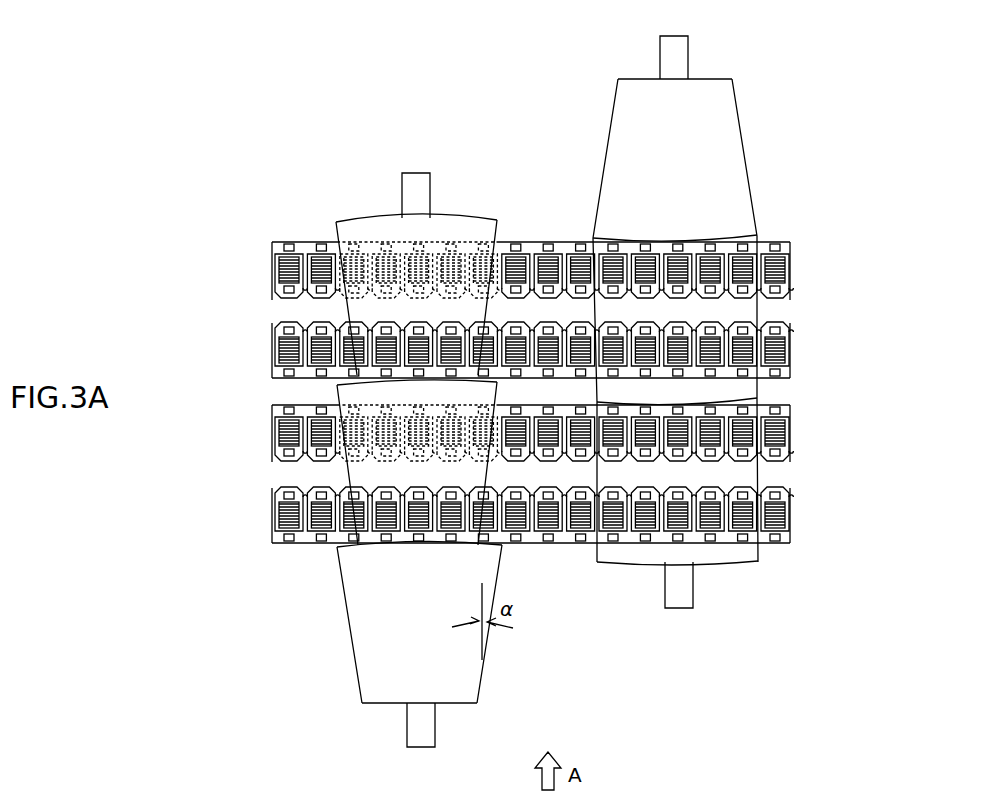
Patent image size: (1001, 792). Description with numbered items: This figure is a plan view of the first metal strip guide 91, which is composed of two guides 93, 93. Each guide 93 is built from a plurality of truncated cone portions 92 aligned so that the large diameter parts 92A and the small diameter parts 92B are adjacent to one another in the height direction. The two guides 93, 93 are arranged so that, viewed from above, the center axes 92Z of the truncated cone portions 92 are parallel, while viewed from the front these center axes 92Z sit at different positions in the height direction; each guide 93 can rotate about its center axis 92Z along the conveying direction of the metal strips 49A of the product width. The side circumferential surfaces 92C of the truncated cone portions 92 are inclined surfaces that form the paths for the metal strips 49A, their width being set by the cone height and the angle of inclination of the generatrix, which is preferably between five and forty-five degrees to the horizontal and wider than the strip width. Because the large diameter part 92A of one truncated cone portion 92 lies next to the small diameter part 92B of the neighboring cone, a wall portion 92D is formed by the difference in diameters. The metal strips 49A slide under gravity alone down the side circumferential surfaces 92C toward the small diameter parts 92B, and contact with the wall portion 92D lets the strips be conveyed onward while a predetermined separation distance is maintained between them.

The first metal strip guide 91 is at (422, 89).
The guide 93 is at (331, 145).
The truncated cone portion 92 is at (742, 98).
The large diameter part 92A is at (730, 238).
The small diameter part 92B is at (713, 78).
The side circumferential surface 92C is at (728, 150).
The wall portion 92D is at (677, 240).
The center axis 92Z is at (678, 597).
The metal strip of the product width 49A is at (807, 259).